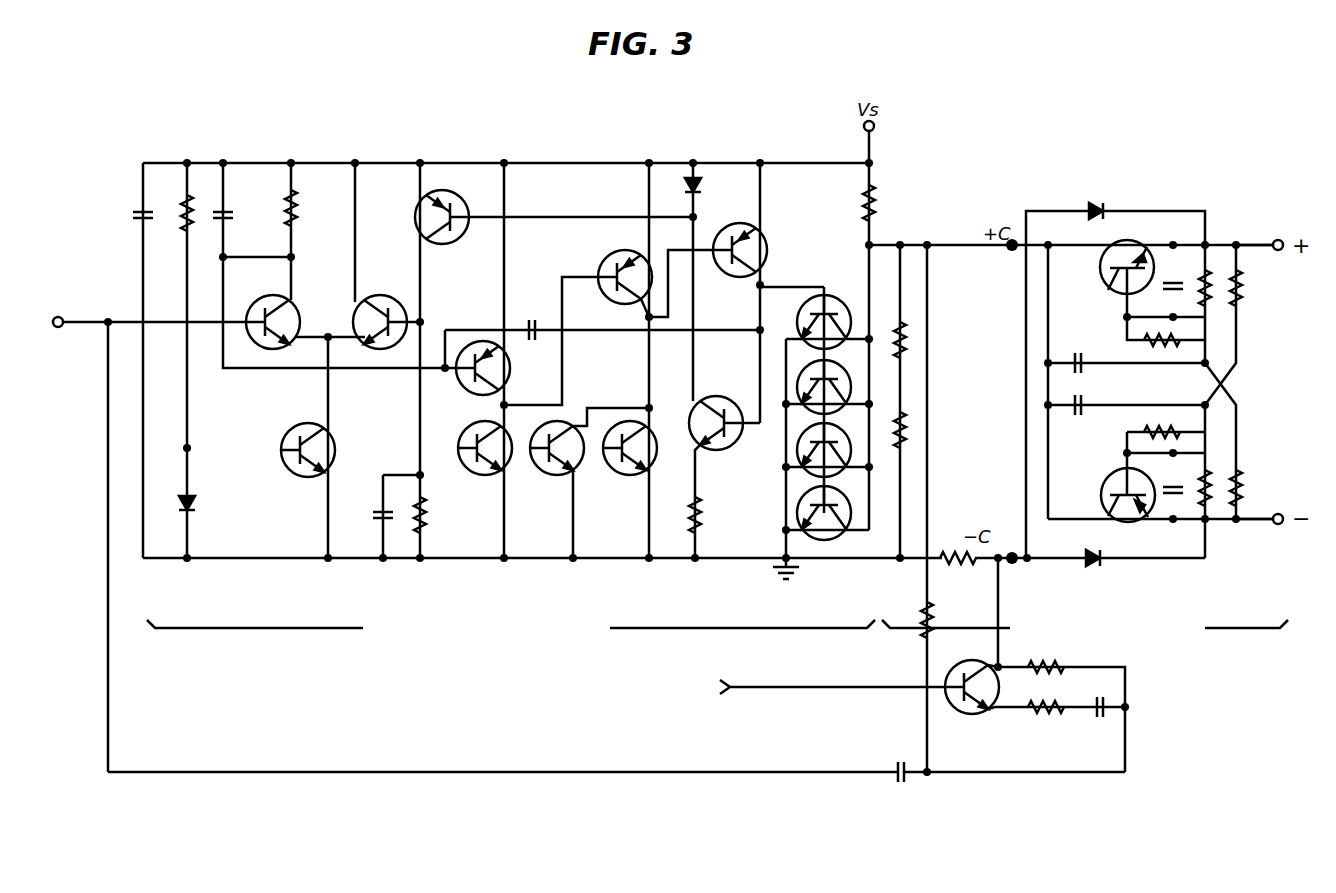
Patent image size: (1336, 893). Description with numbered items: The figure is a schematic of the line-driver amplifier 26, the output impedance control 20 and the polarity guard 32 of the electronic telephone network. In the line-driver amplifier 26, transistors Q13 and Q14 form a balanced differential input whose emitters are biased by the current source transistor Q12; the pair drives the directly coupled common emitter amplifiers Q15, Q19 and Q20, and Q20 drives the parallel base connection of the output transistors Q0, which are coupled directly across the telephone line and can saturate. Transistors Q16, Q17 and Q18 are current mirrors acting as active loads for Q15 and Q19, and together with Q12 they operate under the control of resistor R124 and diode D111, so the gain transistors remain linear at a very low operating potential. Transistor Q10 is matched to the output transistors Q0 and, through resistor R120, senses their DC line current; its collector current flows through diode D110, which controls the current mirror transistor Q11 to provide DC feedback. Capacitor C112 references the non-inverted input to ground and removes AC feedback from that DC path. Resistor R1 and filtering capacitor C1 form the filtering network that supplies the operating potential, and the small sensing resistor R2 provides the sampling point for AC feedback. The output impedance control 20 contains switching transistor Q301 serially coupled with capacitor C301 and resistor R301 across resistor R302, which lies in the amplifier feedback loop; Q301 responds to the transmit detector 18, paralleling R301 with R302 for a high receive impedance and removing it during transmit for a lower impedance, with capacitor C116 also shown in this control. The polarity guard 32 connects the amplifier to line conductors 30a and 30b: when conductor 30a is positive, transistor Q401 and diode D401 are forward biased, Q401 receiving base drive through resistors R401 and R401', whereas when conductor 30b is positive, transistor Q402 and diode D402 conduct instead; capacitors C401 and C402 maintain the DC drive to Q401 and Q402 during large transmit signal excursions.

The filtering capacitor C1 is at (132, 213).
The resistor R124 is at (187, 196).
The diode D111 is at (196, 510).
The differential input transistor Q13 is at (274, 295).
The differential input transistor Q14 is at (394, 295).
The current mirror transistor Q11 is at (482, 178).
The diode D110 is at (700, 190).
The common emitter amplifier transistor Q19 is at (606, 258).
The common emitter amplifier transistor Q20 is at (766, 232).
The common emitter amplifier transistor Q15 is at (511, 370).
The current mirror transistor Q12 is at (287, 468).
The current mirror transistor Q16 is at (477, 478).
The current mirror transistor Q17 is at (556, 478).
The current mirror transistor Q18 is at (630, 478).
The capacitor C112 is at (376, 512).
The transistor Q10 is at (716, 405).
The resistor R120 is at (702, 513).
The output transistors Q0 is at (850, 300).
The resistor R1 is at (877, 203).
The sensing resistor R2 is at (960, 548).
The switching transistor Q301 is at (982, 662).
The resistor R302 is at (1037, 679).
The resistor R301 is at (1045, 708).
The capacitor C301 is at (1102, 720).
The capacitor C116 is at (902, 758).
The diode D402 is at (1096, 198).
The transistor Q401 is at (1112, 288).
The resistor R401 is at (1219, 328).
The capacitor C401 is at (1090, 350).
The capacitor C402 is at (1086, 400).
The transistor Q402 is at (1108, 476).
The resistor R401' is at (1268, 479).
The diode D401 is at (1103, 560).
The line conductor 30a is at (1268, 243).
The line conductor 30b is at (1264, 521).
The transmit detector 18 is at (730, 687).
The line-driver amplifier 26 is at (542, 578).
The polarity guard 32 is at (1290, 607).
The output impedance control 20 is at (1305, 812).